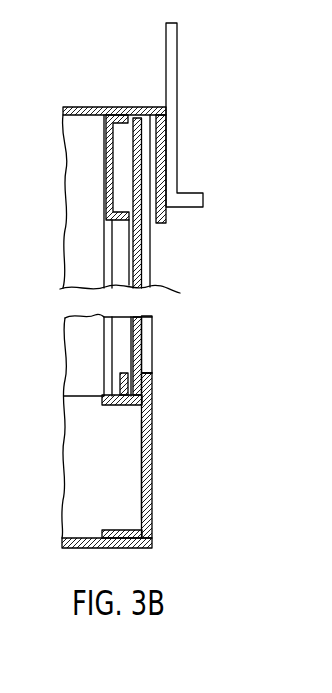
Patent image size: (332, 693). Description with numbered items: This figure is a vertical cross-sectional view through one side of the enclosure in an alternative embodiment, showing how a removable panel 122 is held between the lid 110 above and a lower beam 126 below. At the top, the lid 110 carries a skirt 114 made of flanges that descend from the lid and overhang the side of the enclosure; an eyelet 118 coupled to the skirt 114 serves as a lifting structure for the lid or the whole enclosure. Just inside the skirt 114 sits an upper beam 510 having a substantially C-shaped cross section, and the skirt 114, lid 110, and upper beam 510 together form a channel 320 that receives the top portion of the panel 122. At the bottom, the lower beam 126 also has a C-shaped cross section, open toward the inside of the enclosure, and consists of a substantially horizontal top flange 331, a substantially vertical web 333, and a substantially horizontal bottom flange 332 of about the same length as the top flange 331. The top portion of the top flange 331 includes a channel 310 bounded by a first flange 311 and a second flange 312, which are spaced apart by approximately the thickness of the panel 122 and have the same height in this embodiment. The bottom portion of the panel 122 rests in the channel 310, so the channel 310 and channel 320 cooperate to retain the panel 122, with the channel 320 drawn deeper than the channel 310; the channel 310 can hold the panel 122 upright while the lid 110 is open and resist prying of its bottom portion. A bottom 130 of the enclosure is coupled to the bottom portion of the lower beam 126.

The lid 110 is at (88, 107).
The upper beam 510 is at (104, 164).
The panel 122 is at (148, 326).
The channel 320 is at (148, 222).
The skirt 114 is at (166, 213).
The eyelet 118 is at (173, 72).
The channel 310 is at (146, 368).
The first flange 311 is at (152, 385).
The second flange 312 is at (120, 381).
The top flange 331 is at (112, 405).
The lower beam 126 is at (152, 452).
The web 333 is at (146, 496).
The bottom flange 332 is at (112, 530).
The bottom 130 is at (137, 548).